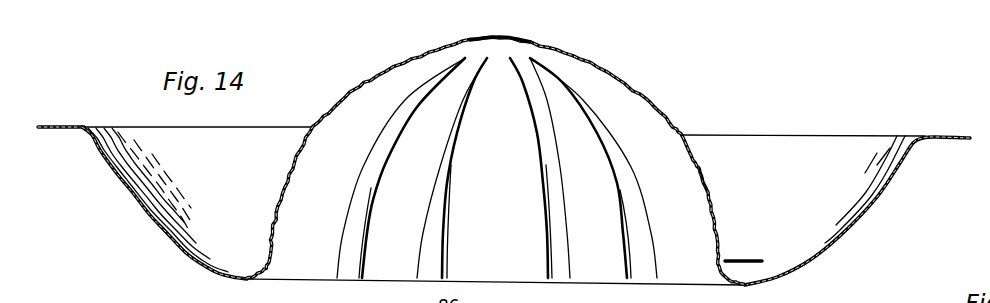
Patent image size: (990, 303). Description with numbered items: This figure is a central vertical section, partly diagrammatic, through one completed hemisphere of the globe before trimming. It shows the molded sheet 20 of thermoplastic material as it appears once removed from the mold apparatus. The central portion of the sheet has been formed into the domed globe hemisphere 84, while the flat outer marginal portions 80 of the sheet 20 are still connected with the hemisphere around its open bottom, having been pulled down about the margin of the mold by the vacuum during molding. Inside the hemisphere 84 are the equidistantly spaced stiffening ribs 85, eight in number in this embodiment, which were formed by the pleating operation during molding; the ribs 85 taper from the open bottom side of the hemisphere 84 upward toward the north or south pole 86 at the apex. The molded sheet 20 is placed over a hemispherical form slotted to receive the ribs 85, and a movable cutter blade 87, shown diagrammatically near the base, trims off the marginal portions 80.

The sheet of thermoplastic material 20 is at (704, 179).
The marginal portions 80 is at (857, 230).
The globe hemisphere 84 is at (617, 80).
The stiffening ribs 85 is at (437, 192).
The pole 86 is at (499, 38).
The cutter blade 87 is at (745, 258).